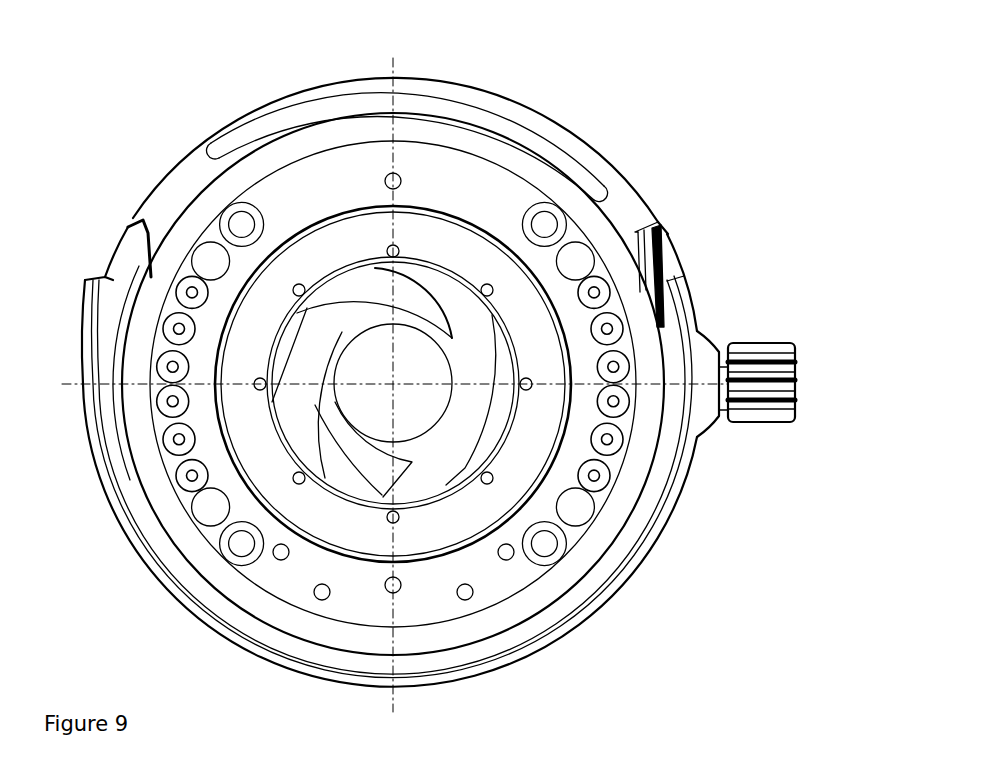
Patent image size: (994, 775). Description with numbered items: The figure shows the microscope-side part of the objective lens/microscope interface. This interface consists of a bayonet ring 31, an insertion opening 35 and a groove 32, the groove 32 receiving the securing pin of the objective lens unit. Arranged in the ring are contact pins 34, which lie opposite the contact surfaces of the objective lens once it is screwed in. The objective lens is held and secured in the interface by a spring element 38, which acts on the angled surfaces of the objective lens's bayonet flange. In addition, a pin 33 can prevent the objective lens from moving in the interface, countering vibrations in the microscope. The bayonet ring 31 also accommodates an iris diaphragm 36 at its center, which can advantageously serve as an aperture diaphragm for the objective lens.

The bayonet ring 31 is at (607, 573).
The groove 32 is at (342, 110).
The pin 33 is at (770, 343).
The contact pins 34 is at (188, 280).
The insertion opening 35 is at (196, 160).
The iris diaphragm 36 is at (453, 320).
The spring element 38 is at (672, 235).